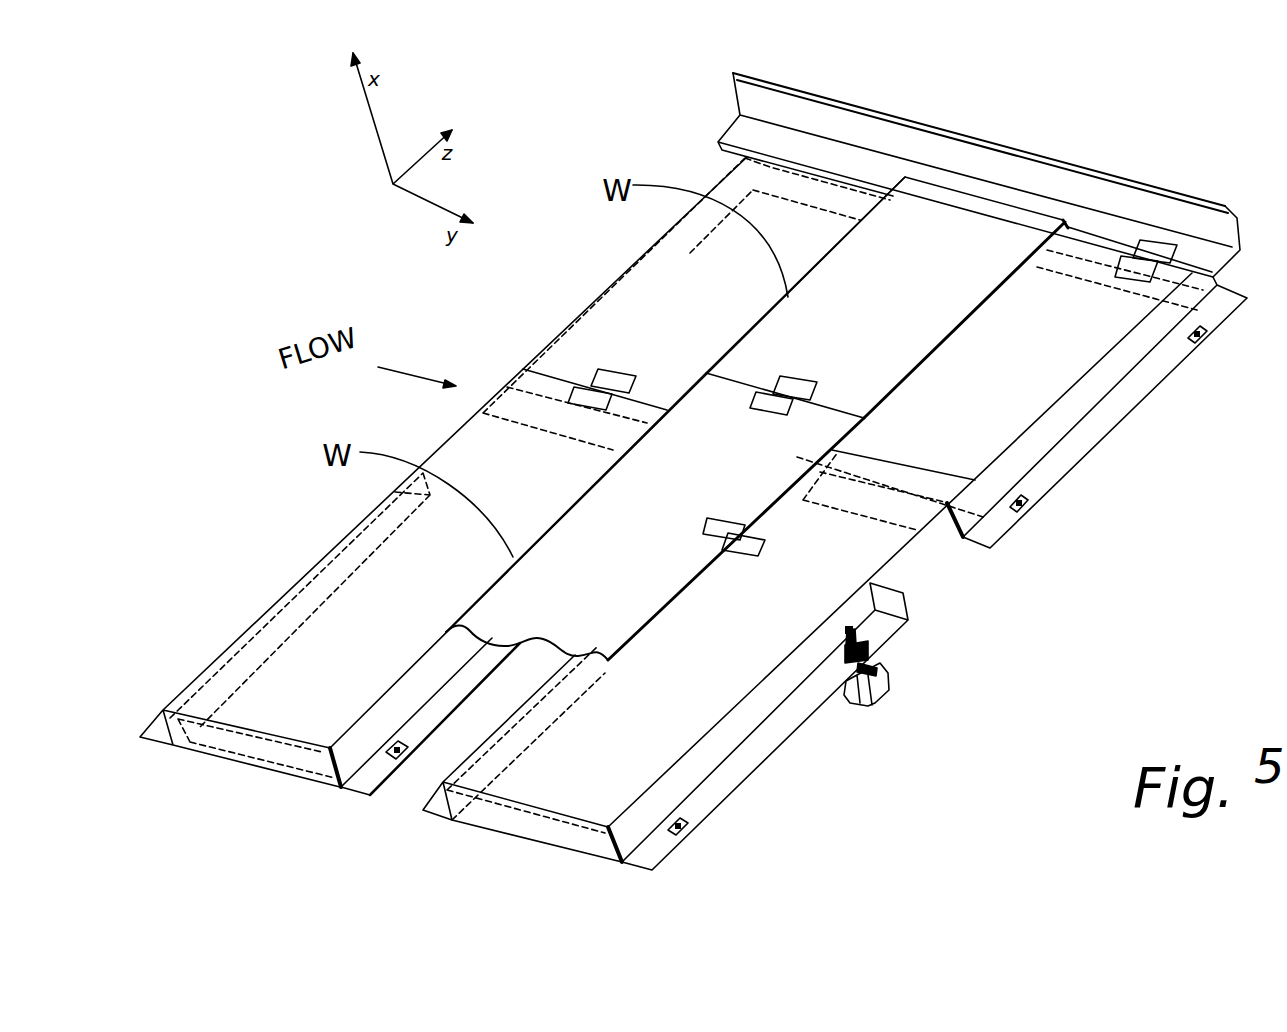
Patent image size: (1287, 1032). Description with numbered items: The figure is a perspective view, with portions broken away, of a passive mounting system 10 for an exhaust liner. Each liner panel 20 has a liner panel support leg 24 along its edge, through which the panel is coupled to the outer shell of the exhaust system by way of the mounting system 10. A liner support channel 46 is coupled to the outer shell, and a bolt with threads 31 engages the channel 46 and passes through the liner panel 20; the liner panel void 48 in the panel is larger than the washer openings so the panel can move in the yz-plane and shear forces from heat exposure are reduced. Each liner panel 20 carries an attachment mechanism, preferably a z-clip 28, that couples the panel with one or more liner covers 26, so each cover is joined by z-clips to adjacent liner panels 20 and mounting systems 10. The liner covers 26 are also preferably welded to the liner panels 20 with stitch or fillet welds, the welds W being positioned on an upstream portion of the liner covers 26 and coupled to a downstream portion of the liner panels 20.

The passive mounting system 10 is at (898, 708).
The liner panel 20 is at (1053, 383).
The liner panel support leg 24 is at (1072, 455).
The liner cover 26 is at (553, 623).
The z-clip 28 is at (607, 366).
The threads 31 is at (860, 640).
The liner support channel 46 is at (895, 677).
The liner panel void 48 is at (400, 760).